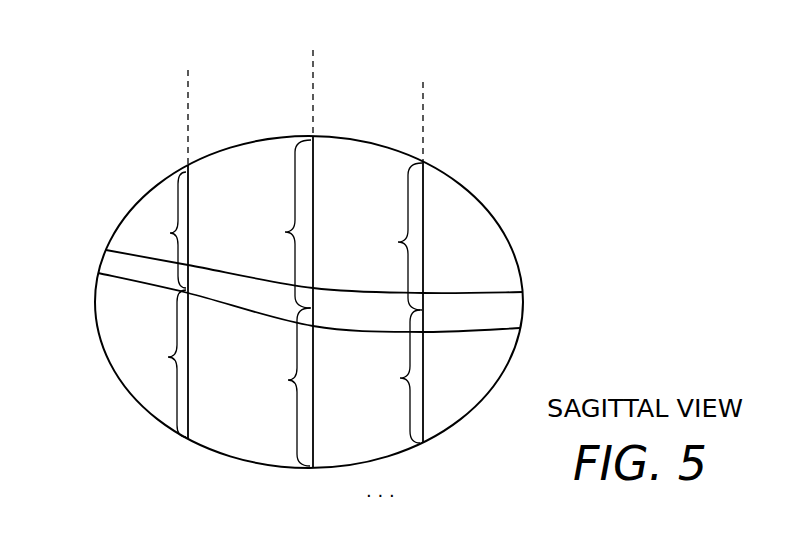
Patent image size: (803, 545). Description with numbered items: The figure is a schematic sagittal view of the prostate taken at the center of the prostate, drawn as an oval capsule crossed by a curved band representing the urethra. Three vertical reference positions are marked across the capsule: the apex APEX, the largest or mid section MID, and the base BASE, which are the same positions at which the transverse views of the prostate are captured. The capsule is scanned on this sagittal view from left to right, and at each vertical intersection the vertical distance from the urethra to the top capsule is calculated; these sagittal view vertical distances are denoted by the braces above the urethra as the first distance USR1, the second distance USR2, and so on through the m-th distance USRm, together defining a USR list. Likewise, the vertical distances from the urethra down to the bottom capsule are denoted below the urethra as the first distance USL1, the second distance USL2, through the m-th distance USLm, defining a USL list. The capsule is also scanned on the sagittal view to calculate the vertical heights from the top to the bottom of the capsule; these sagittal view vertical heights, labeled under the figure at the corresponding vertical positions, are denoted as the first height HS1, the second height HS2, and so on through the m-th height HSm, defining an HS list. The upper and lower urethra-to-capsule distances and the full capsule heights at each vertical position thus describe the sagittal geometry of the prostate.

The apex APEX is at (188, 89).
The mid section MID is at (311, 69).
The base BASE is at (424, 94).
The first sagittal view vertical height HS1 is at (157, 339).
The second sagittal view vertical height HS2 is at (305, 324).
The m-th sagittal view vertical height HSm is at (455, 337).
The first sagittal view vertical distance from urethra to top capsule USR1 is at (173, 233).
The second sagittal view vertical distance from urethra to top capsule USR2 is at (285, 232).
The m-th sagittal view vertical distance from urethra to top capsule USRm is at (398, 242).
The first sagittal view vertical distance from urethra to bottom capsule USL1 is at (170, 358).
The second sagittal view vertical distance from urethra to bottom capsule USL2 is at (288, 380).
The m-th sagittal view vertical distance from urethra to bottom capsule USLm is at (400, 378).